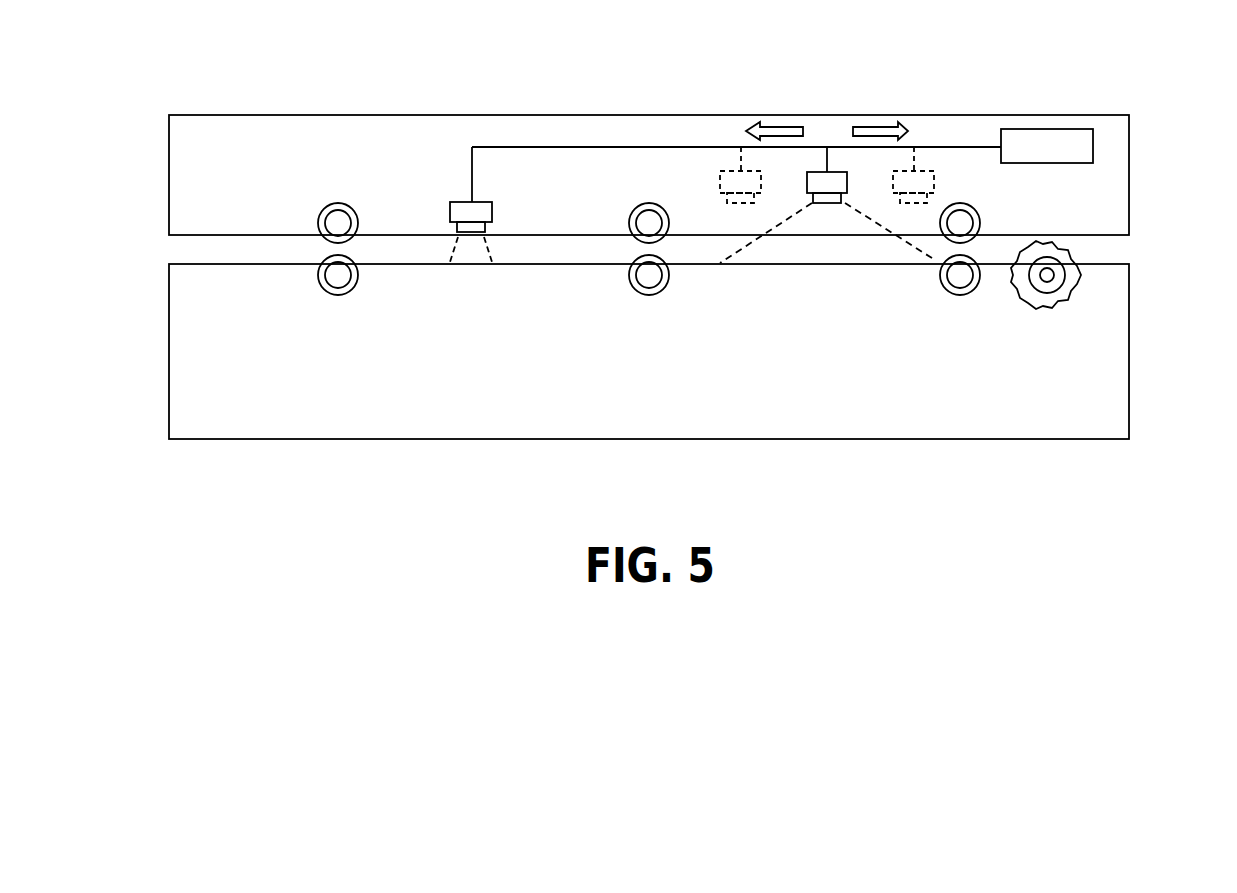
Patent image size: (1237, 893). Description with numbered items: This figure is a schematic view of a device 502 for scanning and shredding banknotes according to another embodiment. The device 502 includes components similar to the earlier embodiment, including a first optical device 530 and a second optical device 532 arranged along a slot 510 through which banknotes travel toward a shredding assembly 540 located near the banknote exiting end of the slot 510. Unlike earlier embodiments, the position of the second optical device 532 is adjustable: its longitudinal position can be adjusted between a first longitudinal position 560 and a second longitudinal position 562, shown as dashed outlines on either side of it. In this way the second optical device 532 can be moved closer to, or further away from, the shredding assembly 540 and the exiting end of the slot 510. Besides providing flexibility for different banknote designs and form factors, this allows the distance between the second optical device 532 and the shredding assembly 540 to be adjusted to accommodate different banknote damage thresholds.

The device 502 is at (606, 115).
The slot 510 is at (1128, 252).
The first optical device 530 is at (465, 202).
The second optical device 532 is at (827, 203).
The shredding assembly 540 is at (1040, 308).
The first longitudinal position 560 is at (720, 181).
The second longitudinal position 562 is at (935, 181).